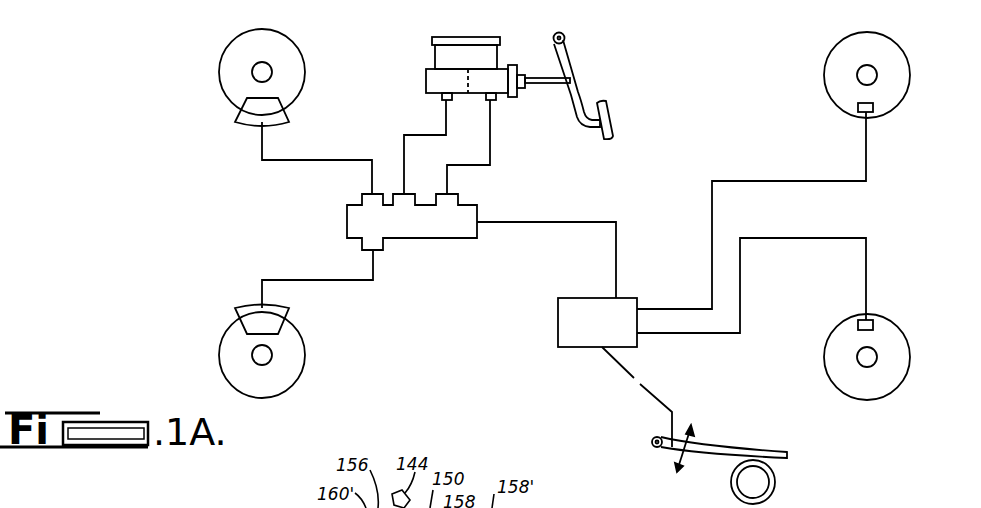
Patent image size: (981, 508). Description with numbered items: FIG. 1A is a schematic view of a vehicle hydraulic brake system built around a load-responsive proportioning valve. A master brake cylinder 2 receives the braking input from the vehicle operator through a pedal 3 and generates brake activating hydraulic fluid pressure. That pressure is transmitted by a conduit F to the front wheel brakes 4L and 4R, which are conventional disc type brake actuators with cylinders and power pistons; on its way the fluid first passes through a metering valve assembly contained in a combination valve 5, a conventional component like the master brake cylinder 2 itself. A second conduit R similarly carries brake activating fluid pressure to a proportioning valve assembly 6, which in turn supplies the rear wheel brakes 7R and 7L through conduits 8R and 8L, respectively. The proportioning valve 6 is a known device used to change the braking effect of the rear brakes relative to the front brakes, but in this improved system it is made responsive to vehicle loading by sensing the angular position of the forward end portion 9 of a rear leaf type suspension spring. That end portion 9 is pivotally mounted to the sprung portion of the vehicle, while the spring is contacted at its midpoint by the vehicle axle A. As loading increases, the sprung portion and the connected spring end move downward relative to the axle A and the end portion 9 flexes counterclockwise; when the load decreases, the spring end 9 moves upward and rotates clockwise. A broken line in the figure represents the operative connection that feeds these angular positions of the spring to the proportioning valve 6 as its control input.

The master brake cylinder 2 is at (443, 37).
The pedal 3 is at (580, 95).
The front wheel brake 4R is at (242, 117).
The front wheel brake 4L is at (246, 306).
The combination valve 5 is at (346, 216).
The proportioning valve assembly 6 is at (558, 318).
The rear wheel brake 7R is at (858, 108).
The rear wheel brake 7L is at (858, 320).
The conduit 8R is at (726, 178).
The conduit 8L is at (757, 236).
The end portion of leaf type suspension spring 9 is at (702, 455).
The vehicle axle A is at (776, 485).
The conduit F is at (442, 107).
The conduit R is at (492, 115).